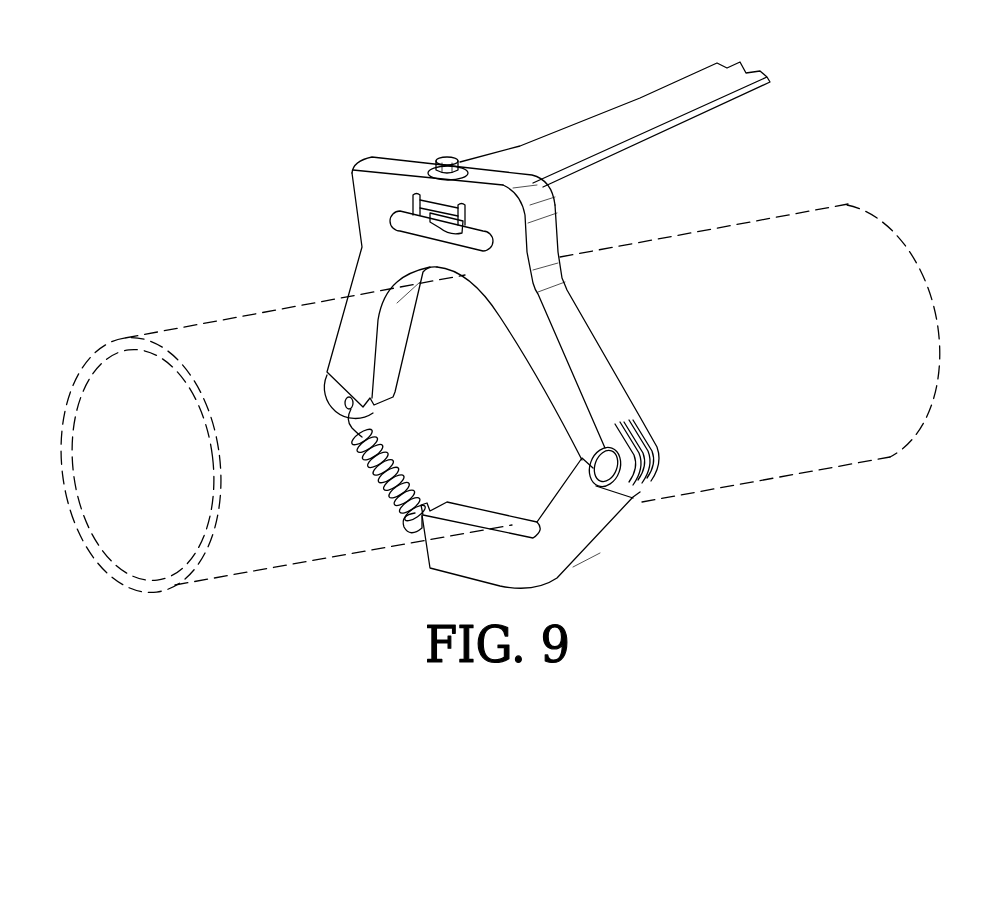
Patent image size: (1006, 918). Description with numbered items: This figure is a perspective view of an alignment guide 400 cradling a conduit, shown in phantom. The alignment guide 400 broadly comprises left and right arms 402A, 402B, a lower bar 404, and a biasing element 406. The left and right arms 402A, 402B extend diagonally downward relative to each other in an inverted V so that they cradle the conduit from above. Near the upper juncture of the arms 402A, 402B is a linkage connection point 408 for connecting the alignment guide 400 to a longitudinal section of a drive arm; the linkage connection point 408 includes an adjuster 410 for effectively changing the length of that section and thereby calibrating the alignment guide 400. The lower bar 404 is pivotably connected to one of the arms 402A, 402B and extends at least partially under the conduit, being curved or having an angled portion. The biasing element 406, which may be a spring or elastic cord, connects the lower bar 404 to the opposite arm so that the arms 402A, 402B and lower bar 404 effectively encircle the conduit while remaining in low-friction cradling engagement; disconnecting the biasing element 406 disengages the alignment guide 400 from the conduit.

The alignment guide 400 is at (486, 319).
The left arm 402A is at (603, 330).
The right arm 402B is at (350, 268).
The lower bar 404 is at (605, 560).
The biasing element 406 is at (368, 489).
The linkage connection point 408 is at (433, 123).
The adjuster 410 is at (460, 150).